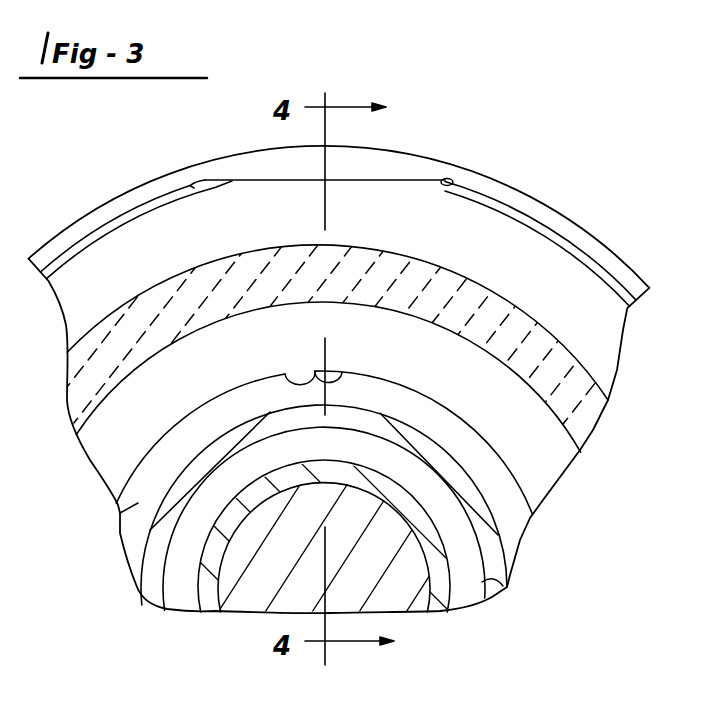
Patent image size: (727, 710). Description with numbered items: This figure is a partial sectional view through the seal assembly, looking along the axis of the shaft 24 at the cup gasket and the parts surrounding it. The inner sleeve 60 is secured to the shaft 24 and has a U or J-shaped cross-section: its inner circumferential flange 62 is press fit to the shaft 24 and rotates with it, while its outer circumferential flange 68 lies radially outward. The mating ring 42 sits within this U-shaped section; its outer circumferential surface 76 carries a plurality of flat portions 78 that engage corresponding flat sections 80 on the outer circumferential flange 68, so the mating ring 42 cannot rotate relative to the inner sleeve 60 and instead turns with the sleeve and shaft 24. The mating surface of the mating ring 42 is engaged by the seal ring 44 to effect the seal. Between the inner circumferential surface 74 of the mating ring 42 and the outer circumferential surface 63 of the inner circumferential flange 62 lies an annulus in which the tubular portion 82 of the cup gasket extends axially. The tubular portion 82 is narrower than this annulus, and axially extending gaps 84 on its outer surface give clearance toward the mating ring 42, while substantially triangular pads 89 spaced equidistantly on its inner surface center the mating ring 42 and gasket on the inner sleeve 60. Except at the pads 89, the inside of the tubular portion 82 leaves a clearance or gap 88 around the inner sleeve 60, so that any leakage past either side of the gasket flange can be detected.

The shaft 24 is at (400, 600).
The mating ring 42 is at (152, 259).
The seal ring 44 is at (608, 403).
The inner sleeve 60 is at (592, 235).
The inner circumferential flange 62 is at (442, 613).
The outer circumferential surface 63 is at (503, 587).
The outer circumferential flange 68 is at (515, 200).
The inner circumferential surface 74 is at (285, 368).
The outer circumferential surface 76 is at (188, 195).
The flat portions 78 is at (265, 185).
The flat sections 80 is at (450, 182).
The tubular portion 82 is at (120, 522).
The gaps 84 is at (342, 365).
The clearance or gap 88 is at (352, 410).
The pads 89 is at (445, 466).